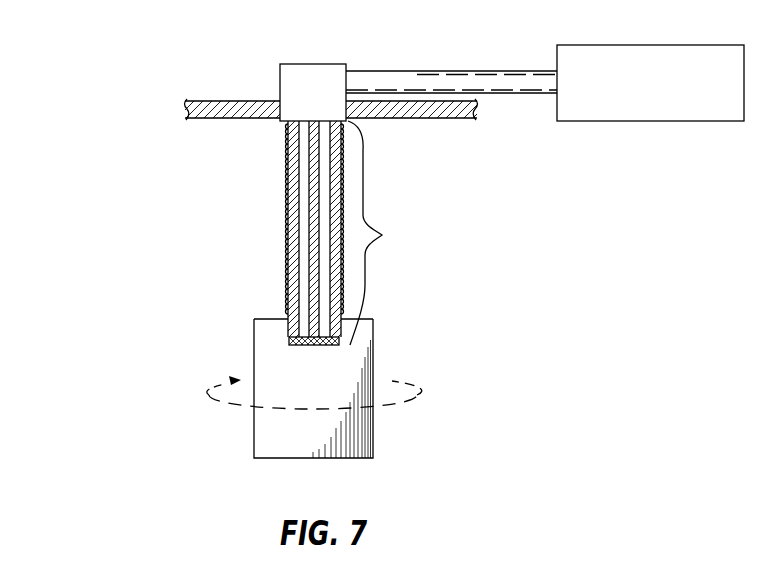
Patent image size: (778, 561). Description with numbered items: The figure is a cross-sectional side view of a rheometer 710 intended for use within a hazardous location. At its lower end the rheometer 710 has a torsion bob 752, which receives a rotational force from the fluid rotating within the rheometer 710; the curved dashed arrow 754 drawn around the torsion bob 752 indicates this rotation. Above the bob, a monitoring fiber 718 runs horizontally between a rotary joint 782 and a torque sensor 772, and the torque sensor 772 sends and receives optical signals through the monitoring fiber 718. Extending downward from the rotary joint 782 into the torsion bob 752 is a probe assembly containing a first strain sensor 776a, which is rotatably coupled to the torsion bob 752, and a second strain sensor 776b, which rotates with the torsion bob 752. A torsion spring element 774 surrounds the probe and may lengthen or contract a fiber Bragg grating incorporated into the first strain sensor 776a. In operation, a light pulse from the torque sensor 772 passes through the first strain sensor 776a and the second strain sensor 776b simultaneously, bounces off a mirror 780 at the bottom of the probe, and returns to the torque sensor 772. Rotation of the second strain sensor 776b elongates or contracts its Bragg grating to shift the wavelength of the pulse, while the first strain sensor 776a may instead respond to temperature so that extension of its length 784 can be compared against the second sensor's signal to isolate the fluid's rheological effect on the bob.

The rheometer 710 is at (115, 147).
The monitoring fiber 718 is at (452, 71).
The torsion bob 752 is at (265, 426).
The rotation direction 754 is at (413, 390).
The torque sensor 772 is at (632, 96).
The torsion spring element 774 is at (283, 163).
The first strain sensor 776a is at (288, 263).
The second strain sensor 776b is at (313, 207).
The mirror 780 is at (289, 337).
The rotary joint 782 is at (315, 74).
The length 784 is at (388, 233).